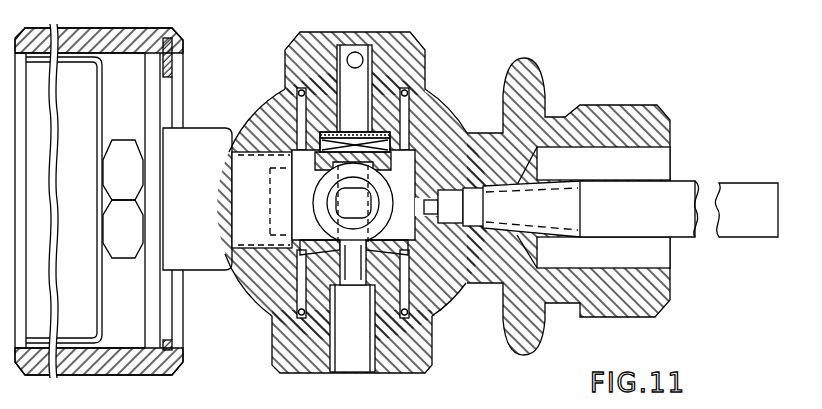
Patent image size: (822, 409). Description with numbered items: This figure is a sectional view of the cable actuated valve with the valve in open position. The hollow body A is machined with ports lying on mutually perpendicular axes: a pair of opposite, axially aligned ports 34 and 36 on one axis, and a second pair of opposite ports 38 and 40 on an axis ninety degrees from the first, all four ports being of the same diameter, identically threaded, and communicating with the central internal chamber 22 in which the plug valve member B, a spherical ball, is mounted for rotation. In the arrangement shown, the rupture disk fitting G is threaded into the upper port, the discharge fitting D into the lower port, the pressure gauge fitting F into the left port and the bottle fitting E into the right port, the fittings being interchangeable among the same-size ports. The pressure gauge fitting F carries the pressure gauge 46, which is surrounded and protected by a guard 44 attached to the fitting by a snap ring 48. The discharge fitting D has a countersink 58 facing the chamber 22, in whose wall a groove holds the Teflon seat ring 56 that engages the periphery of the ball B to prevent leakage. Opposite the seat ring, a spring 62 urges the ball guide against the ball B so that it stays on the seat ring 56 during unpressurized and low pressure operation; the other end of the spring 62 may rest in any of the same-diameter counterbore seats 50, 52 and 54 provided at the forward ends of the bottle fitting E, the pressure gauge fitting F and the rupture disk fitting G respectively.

The guard 44 is at (126, 29).
The pressure gauge 46 is at (92, 290).
The snap ring 48 is at (183, 42).
The pressure gauge fitting F is at (198, 128).
The port 34 is at (262, 116).
The port 36 is at (443, 255).
The port 38 is at (441, 110).
The seat 54 is at (447, 132).
The port 40 is at (408, 297).
The hollow body A is at (263, 300).
The rupture disk fitting G is at (425, 45).
The discharge fitting D is at (432, 360).
The bottle fitting E is at (612, 105).
The seat 52 is at (266, 207).
The internal chamber 22 is at (318, 203).
The spring 62 is at (354, 142).
The plug valve member B is at (381, 191).
The seat ring 56 is at (317, 243).
The countersink 58 is at (339, 262).
The seat 50 is at (423, 233).